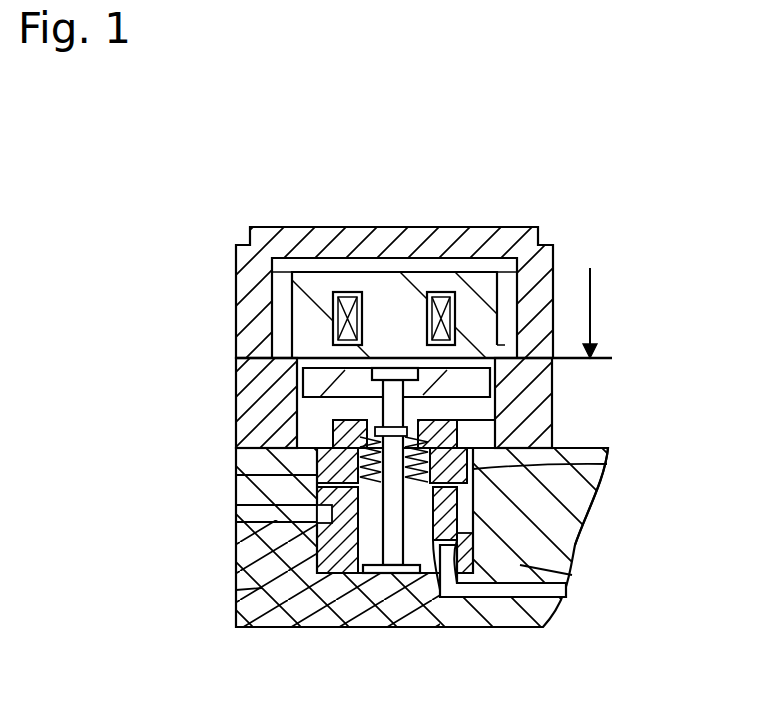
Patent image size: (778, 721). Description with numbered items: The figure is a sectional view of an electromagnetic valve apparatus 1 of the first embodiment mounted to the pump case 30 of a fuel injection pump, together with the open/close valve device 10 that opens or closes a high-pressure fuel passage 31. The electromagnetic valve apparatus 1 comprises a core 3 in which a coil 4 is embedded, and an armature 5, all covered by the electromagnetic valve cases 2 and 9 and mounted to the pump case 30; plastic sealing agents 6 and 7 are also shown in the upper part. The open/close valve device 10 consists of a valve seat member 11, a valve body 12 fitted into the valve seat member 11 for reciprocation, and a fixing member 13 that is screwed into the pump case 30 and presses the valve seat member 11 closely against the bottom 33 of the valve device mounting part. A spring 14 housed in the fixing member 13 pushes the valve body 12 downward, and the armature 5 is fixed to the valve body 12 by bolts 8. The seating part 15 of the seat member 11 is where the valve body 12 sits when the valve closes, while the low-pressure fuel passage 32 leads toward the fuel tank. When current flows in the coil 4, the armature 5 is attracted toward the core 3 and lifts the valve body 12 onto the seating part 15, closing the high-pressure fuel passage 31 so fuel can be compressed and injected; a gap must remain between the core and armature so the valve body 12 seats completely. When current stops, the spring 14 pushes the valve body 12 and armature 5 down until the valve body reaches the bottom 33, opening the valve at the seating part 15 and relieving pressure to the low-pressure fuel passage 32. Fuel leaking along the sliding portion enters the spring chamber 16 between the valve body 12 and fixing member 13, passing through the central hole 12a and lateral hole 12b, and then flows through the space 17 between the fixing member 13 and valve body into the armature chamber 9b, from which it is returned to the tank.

The electromagnetic valve apparatus 1 is at (222, 298).
The electromagnetic valve case 2 is at (550, 253).
The core 3 is at (313, 282).
The coil 4 is at (348, 295).
The armature 5 is at (273, 283).
The plastic sealing agent 6 is at (430, 360).
The plastic sealing agent 7 is at (497, 328).
The bolt 8 is at (393, 365).
The electromagnetic valve case 9 is at (563, 420).
The armature chamber 9b is at (563, 391).
The open/close valve device 10 is at (304, 483).
The valve seat member 11 is at (240, 591).
The valve body 12 is at (247, 627).
The central hole 12a is at (367, 600).
The lateral hole 12b is at (580, 465).
The fixing member 13 is at (372, 438).
The spring 14 is at (340, 438).
The seating part 15 is at (572, 575).
The spring chamber 16 is at (360, 462).
The space 17 is at (365, 422).
The pump case 30 is at (580, 510).
The high-pressure fuel passage 31 is at (535, 600).
The low-pressure fuel passage 32 is at (317, 513).
The bottom 33 is at (420, 597).